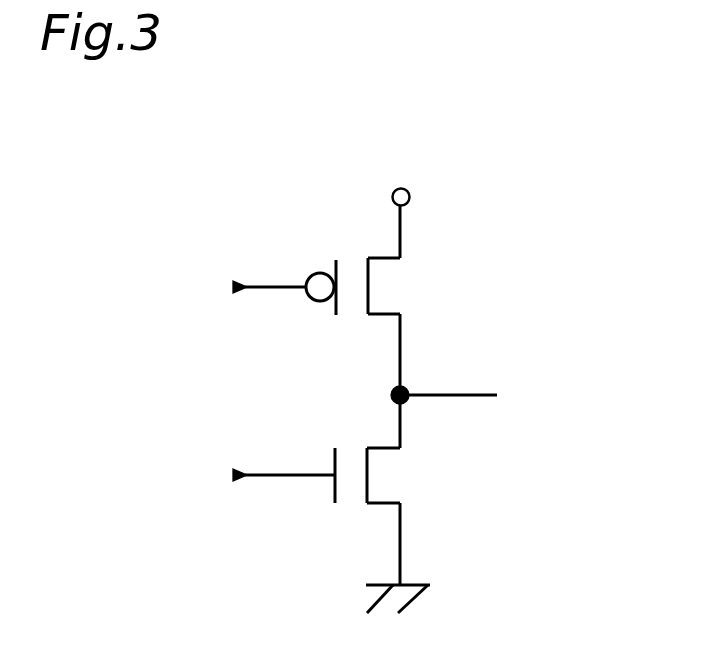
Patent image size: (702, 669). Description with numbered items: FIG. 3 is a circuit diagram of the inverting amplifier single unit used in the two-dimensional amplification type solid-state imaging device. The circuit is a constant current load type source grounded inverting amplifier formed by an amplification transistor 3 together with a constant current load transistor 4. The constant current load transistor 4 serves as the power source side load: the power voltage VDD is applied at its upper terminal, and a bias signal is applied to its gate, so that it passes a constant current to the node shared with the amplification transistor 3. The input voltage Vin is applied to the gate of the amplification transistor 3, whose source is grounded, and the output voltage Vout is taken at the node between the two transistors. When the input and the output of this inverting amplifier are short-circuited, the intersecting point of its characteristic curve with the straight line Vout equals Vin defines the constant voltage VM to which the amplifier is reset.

The amplification transistor 3 is at (390, 482).
The constant current load transistor 4 is at (392, 289).
The power voltage VDD is at (404, 208).
The output voltage Vout is at (484, 398).
The input voltage Vin is at (252, 477).